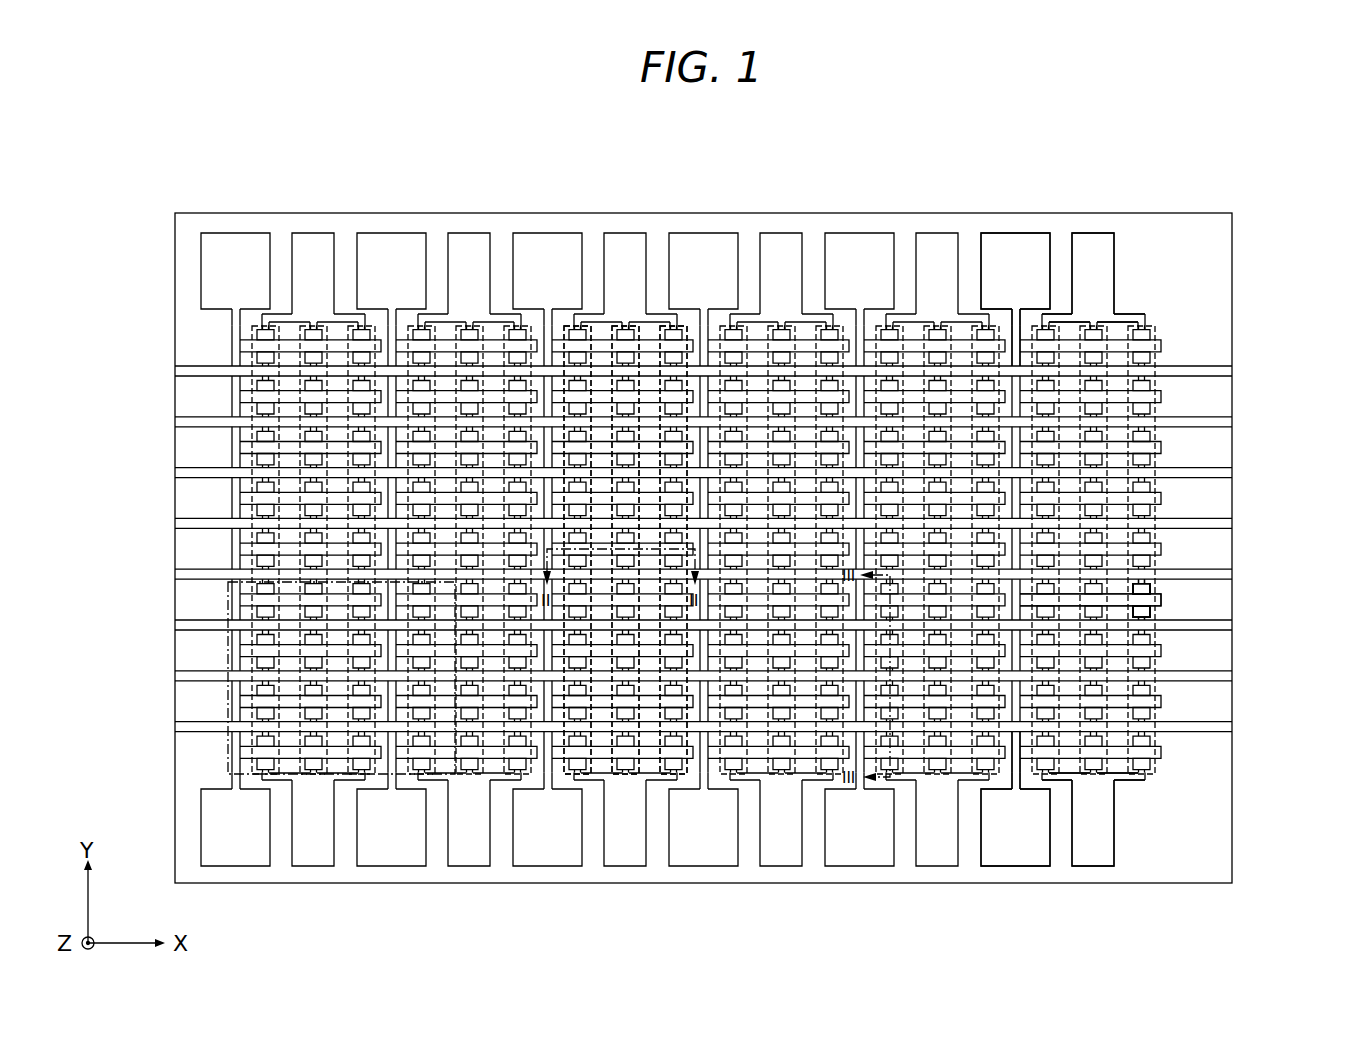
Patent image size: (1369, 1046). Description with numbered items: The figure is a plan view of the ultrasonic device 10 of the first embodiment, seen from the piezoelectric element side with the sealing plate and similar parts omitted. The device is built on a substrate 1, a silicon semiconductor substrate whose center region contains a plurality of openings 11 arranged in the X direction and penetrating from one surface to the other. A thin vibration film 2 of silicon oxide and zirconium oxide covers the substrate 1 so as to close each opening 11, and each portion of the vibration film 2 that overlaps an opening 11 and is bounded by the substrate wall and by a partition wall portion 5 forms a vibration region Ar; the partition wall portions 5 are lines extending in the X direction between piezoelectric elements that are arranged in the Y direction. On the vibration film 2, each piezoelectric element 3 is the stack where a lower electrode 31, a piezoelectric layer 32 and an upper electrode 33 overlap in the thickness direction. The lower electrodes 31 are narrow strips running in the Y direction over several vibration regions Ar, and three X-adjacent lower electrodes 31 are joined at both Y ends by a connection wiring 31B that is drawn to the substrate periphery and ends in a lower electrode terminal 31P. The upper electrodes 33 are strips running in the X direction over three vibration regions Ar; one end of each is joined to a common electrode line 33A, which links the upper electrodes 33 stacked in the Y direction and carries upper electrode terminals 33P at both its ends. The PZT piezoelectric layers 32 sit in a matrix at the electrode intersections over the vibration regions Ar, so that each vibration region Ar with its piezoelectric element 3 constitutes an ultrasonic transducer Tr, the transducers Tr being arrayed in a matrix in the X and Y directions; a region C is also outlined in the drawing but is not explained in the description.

The ultrasonic device 10 is at (255, 121).
The substrate 1 is at (175, 268).
The vibration film 2 is at (186, 305).
The partition wall portion 5 is at (1192, 523).
The opening 11 is at (678, 313).
The common electrode line 33A is at (1011, 320).
The upper electrode terminal 33P is at (1013, 243).
The lower electrode terminal 31P is at (1093, 243).
The connection wiring 31B is at (1127, 320).
The lower electrode 31 is at (1148, 582).
The piezoelectric layer 32 is at (1143, 600).
The upper electrode 33 is at (1148, 618).
The piezoelectric element 3 is at (1273, 580).
The ultrasonic transducer Tr is at (1307, 605).
The vibration region Ar is at (1150, 618).
The cell region C is at (228, 644).